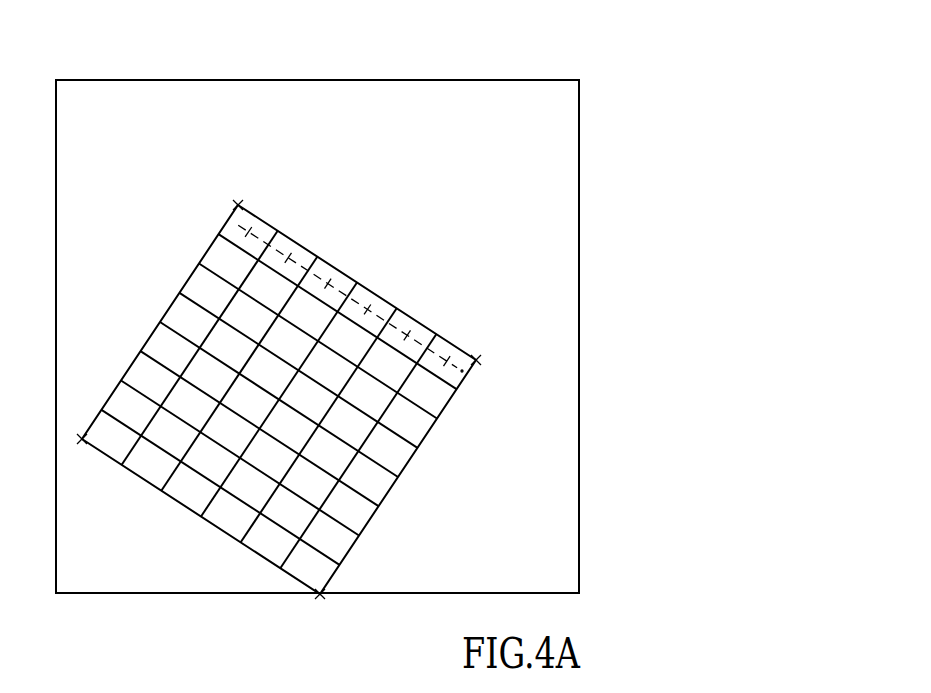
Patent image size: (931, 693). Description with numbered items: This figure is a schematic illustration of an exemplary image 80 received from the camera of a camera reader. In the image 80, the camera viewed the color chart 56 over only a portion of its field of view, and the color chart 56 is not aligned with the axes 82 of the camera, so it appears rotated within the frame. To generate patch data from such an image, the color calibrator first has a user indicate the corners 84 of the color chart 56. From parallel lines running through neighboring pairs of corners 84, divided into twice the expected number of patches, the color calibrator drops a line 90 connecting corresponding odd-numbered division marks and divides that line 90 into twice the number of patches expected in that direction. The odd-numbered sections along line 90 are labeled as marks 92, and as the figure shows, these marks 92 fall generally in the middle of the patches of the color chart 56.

The image 80 is at (373, 308).
The axes 82 is at (520, 79).
The corners 84 is at (238, 205).
The color chart 56 is at (388, 270).
The line 90 is at (462, 372).
The marks 92 is at (247, 232).